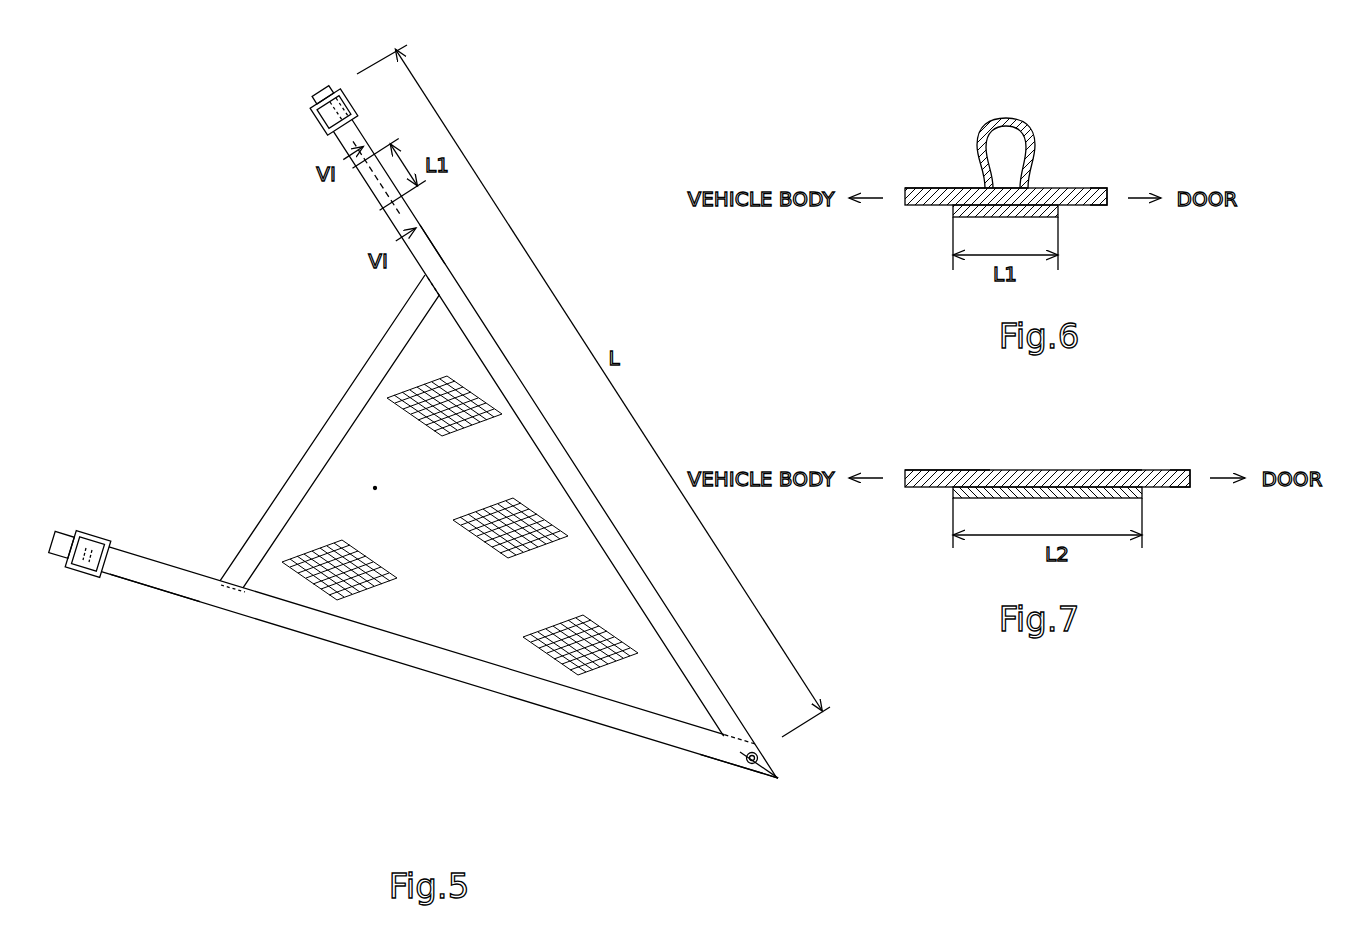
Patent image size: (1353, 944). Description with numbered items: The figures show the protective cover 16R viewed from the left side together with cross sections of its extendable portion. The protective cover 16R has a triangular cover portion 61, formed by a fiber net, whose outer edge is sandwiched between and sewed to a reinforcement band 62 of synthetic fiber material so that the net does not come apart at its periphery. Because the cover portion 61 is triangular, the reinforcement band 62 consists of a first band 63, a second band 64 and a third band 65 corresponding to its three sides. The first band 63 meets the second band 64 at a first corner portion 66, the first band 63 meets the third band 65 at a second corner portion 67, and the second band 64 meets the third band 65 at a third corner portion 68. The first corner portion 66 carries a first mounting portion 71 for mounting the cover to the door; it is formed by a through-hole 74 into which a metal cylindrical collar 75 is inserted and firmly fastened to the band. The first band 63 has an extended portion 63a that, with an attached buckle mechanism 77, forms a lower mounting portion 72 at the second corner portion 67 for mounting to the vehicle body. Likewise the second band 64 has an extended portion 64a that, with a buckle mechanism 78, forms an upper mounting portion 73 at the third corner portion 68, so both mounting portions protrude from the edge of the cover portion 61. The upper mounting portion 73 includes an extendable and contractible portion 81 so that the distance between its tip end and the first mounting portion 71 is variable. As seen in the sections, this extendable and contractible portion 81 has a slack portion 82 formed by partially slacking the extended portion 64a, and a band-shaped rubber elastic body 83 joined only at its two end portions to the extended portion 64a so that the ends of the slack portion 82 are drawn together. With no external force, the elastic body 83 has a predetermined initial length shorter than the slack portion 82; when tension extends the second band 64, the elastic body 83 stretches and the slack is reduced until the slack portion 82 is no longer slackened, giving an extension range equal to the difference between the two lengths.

In FIG. 5, the protective cover 16R is at (439, 449).
In FIG. 5, the cover portion 61 is at (375, 488).
In FIG. 5, the reinforcement band 62 is at (340, 397).
In FIG. 5, the first band 63 is at (470, 682).
In FIG. 5, the extended portion 63a is at (172, 597).
In FIG. 5, the second band 64 is at (568, 465).
In FIG. 5, the extended portion 64a is at (433, 252).
In FIG. 6, the extended portion 64a is at (928, 190).
In FIG. 7, the extended portion 64a is at (920, 470).
In FIG. 5, the third band 65 is at (258, 538).
In FIG. 5, the first corner portion 66 is at (779, 771).
In FIG. 5, the second corner portion 67 is at (223, 602).
In FIG. 5, the third corner portion 68 is at (448, 272).
In FIG. 5, the first mounting portion 71 is at (730, 767).
In FIG. 5, the lower mounting portion 72 is at (57, 527).
In FIG. 5, the upper mounting portion 73 is at (312, 103).
In FIG. 6, the upper mounting portion 73 is at (1097, 172).
In FIG. 7, the upper mounting portion 73 is at (1178, 453).
In FIG. 5, the through-hole 74 is at (752, 765).
In FIG. 5, the cylindrical collar 75 is at (760, 767).
In FIG. 5, the buckle mechanism 77 is at (87, 530).
In FIG. 5, the buckle mechanism 78 is at (322, 127).
In FIG. 5, the extendable and contractible portion 81 is at (382, 210).
In FIG. 6, the extendable and contractible portion 81 is at (952, 185).
In FIG. 7, the extendable and contractible portion 81 is at (968, 468).
In FIG. 5, the slack portion 82 is at (386, 198).
In FIG. 6, the slack portion 82 is at (1013, 118).
In FIG. 7, the slack portion 82 is at (1117, 470).
In FIG. 5, the elastic body 83 is at (380, 192).
In FIG. 6, the elastic body 83 is at (1007, 203).
In FIG. 7, the elastic body 83 is at (1073, 487).